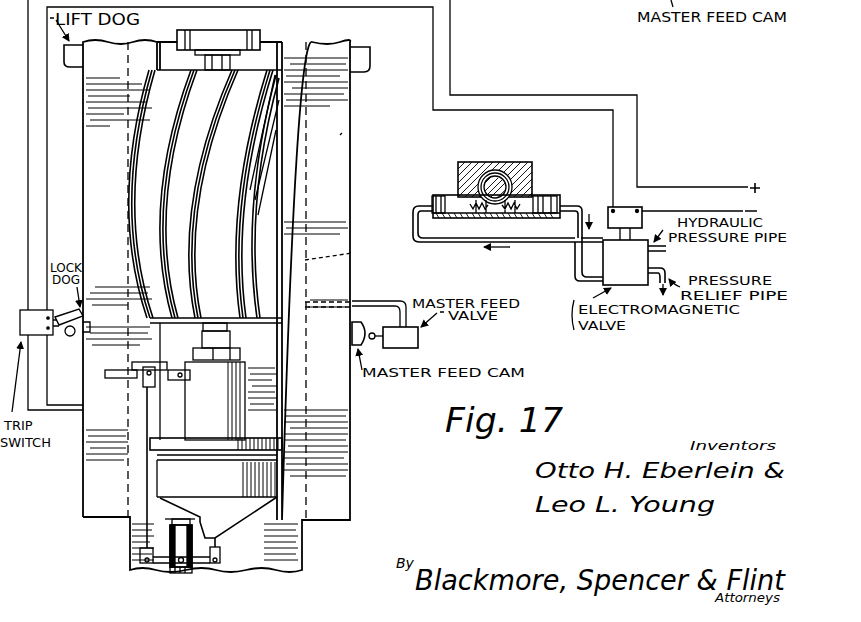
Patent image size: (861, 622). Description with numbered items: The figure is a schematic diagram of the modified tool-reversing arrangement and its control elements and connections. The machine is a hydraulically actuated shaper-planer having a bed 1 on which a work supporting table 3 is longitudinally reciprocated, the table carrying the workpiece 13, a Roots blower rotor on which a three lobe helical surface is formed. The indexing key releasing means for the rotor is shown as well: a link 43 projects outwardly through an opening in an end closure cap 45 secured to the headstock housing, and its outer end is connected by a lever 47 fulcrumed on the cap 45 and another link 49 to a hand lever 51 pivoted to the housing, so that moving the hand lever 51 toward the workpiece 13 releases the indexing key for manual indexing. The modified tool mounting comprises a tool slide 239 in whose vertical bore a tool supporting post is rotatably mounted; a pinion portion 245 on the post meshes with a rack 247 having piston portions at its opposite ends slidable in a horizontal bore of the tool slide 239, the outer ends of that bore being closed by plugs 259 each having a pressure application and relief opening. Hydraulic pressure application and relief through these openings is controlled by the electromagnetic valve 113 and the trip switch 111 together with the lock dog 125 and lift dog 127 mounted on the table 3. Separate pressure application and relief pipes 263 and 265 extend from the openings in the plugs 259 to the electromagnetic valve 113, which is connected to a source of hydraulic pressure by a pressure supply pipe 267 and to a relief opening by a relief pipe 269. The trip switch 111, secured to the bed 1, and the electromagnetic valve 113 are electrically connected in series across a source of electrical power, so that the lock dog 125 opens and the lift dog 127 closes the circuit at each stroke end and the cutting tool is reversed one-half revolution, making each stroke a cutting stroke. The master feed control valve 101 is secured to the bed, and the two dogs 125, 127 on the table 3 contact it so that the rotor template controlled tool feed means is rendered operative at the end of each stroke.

The bed 1 is at (110, 545).
The work supporting table 3 is at (342, 135).
The workpiece 13 is at (150, 180).
The link 43 is at (214, 540).
The end closure cap 45 is at (222, 528).
The lever 47 is at (160, 565).
The link 49 is at (147, 488).
The hand lever 51 is at (117, 374).
The master feed control valve 101 is at (418, 340).
The trip switch 111 is at (70, 337).
The electromagnetic valve 113 is at (613, 277).
The lock dog 125 is at (84, 326).
The lift dog 127 is at (77, 58).
The tool slide 239 is at (508, 162).
The pinion portion 245 is at (490, 172).
The rack 247 is at (507, 208).
The plugs 259 is at (437, 195).
The pressure application and relief pipe 263 is at (577, 241).
The pressure application and relief pipe 265 is at (485, 224).
The pressure supply pipe 267 is at (670, 249).
The relief pipe 269 is at (667, 270).